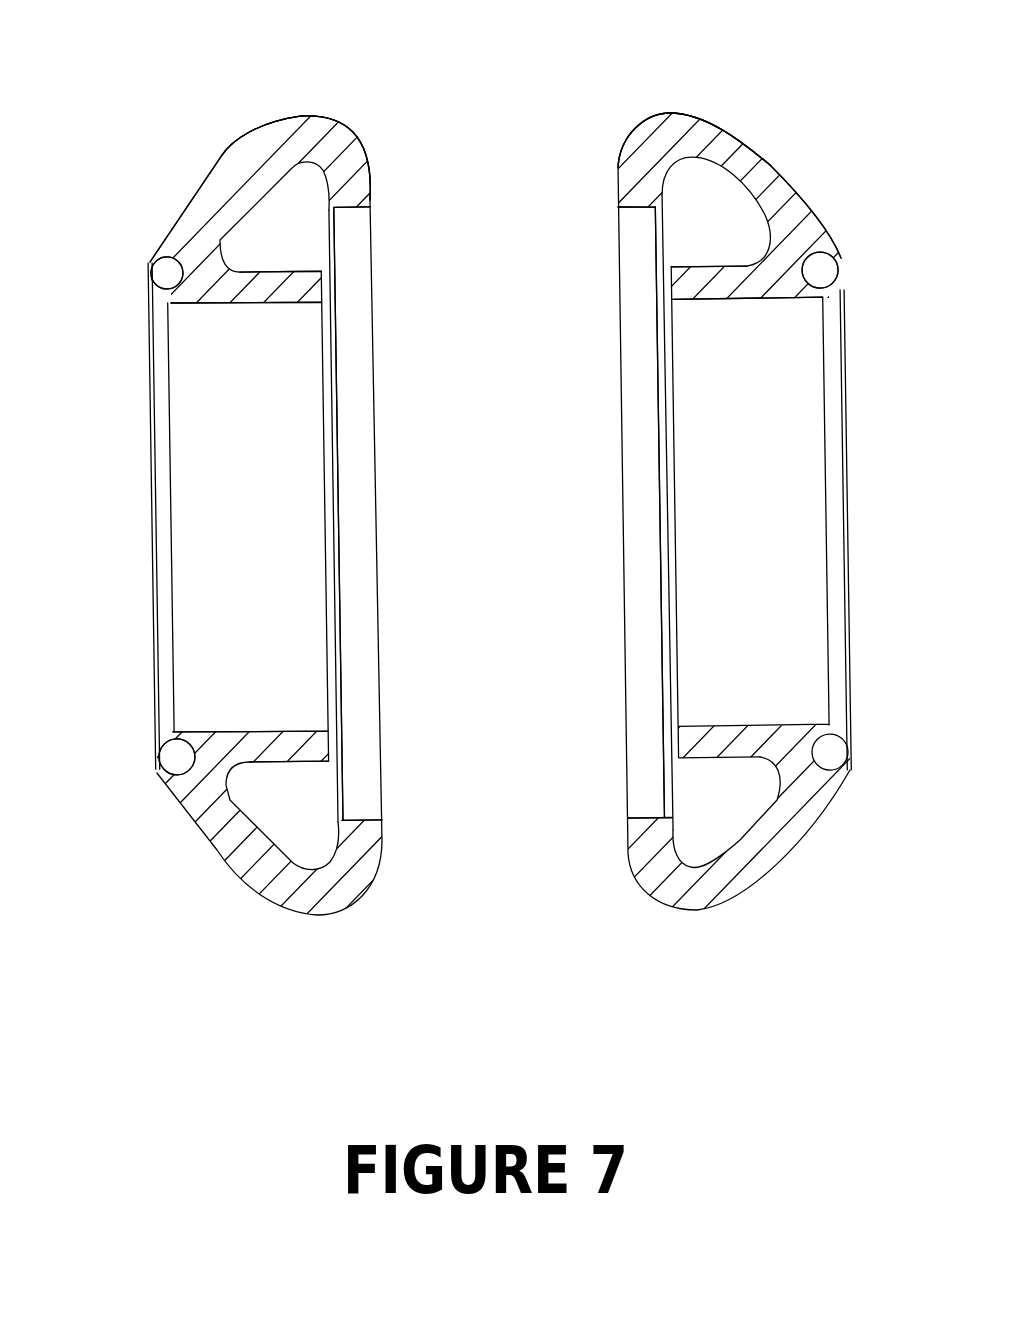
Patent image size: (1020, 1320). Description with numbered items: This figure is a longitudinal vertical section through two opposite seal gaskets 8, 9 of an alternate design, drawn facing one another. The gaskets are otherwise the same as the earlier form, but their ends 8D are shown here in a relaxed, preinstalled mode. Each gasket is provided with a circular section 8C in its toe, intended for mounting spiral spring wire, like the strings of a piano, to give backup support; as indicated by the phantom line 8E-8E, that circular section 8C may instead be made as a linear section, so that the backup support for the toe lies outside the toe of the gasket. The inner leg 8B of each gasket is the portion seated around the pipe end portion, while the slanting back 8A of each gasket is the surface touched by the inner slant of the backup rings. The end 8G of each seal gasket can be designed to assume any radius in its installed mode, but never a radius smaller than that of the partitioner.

The seal gasket 8 is at (263, 148).
The seal gasket 9 is at (708, 152).
The slanting back of gasket 8A is at (190, 200).
The inner leg of gasket 8B is at (272, 735).
The circular section 8C is at (170, 750).
The end of gasket 8D is at (617, 158).
The phantom line 8E is at (172, 258).
The end of seal gasket 8G is at (620, 210).